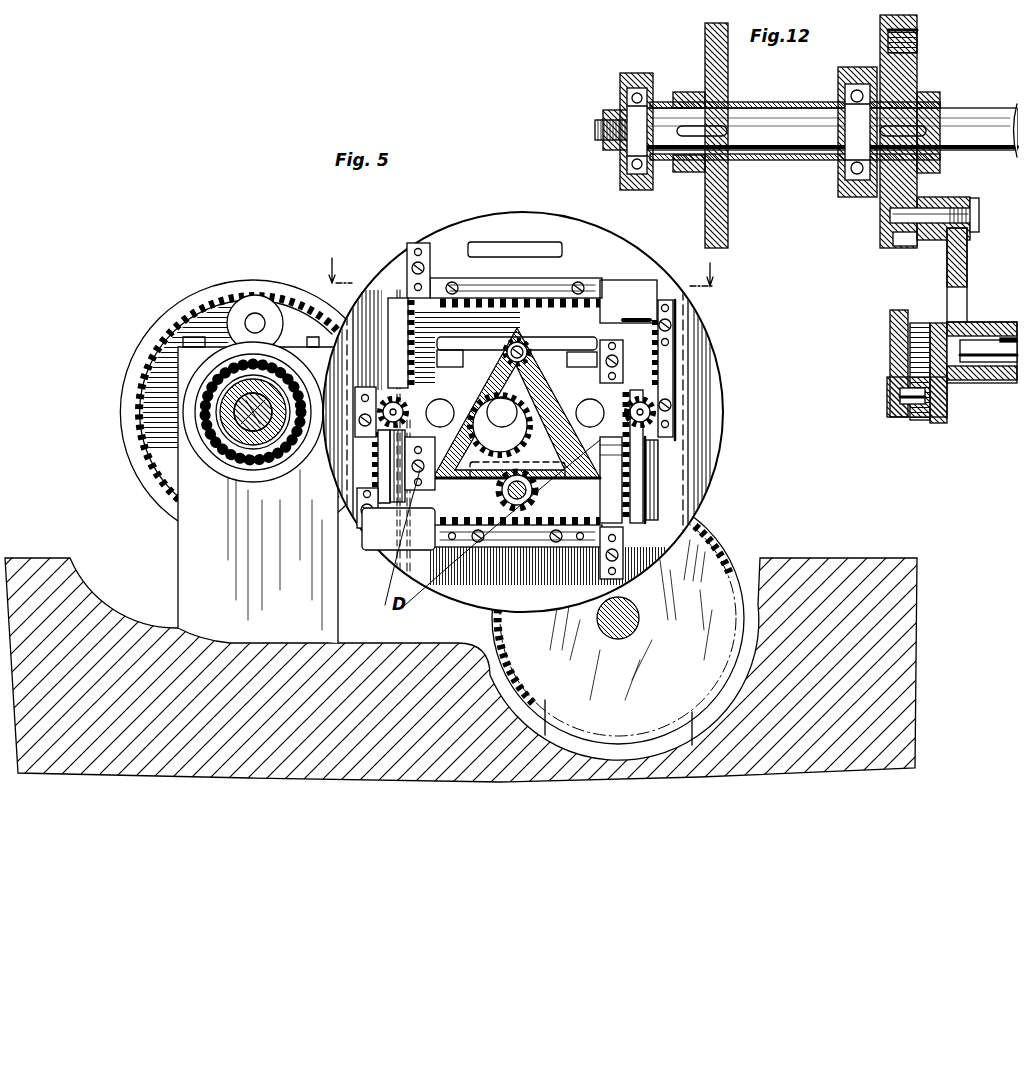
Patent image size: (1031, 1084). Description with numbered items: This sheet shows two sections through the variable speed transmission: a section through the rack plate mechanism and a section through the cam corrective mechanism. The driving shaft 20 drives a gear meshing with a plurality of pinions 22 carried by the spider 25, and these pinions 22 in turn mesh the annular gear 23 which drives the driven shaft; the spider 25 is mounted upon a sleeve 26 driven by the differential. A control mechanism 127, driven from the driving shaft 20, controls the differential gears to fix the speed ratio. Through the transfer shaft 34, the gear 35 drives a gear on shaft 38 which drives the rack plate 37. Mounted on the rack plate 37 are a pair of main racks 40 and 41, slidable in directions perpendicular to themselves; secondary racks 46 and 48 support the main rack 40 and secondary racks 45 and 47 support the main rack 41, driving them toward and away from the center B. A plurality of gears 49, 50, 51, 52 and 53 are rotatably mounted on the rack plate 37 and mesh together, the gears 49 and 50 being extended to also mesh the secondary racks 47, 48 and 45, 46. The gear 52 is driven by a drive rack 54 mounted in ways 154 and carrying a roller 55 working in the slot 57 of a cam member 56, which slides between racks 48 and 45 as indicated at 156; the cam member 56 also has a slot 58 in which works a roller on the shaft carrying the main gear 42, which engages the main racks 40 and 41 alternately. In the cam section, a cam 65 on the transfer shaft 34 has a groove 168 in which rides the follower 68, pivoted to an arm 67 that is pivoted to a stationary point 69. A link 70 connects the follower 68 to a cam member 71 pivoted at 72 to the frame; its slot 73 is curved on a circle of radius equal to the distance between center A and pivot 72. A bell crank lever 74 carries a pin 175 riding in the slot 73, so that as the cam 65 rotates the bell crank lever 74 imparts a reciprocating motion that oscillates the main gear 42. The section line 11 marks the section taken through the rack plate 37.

In FIG. 5, the section line 11- 11 is at (523, 271).
In FIG. 5, the driving shaft 20 is at (232, 424).
In FIG. 5, the pinions 22 is at (250, 312).
In FIG. 5, the annular gear 23 is at (122, 364).
In FIG. 5, the spider 25 is at (228, 312).
In FIG. 5, the sleeve 26 is at (245, 452).
In FIG. 5, the transfer shaft 34 is at (636, 616).
In FIG. 12, the transfer shaft 34 is at (806, 131).
In FIG. 5, the gear 35 is at (618, 618).
In FIG. 12, the gear 35 is at (728, 214).
In FIG. 5, the rack plate 37 is at (446, 232).
In FIG. 5, the shaft 38 is at (500, 425).
In FIG. 5, the main rack 40 is at (500, 278).
In FIG. 5, the main rack 41 is at (520, 540).
In FIG. 5, the main gear 42 is at (498, 540).
In FIG. 5, the secondary rack 45 is at (615, 480).
In FIG. 5, the secondary rack 46 is at (672, 378).
In FIG. 5, the secondary rack 47 is at (360, 492).
In FIG. 5, the secondary rack 48 is at (404, 334).
In FIG. 5, the gear 49 is at (330, 458).
In FIG. 5, the gear 50 is at (655, 405).
In FIG. 5, the gear 51 is at (405, 455).
In FIG. 5, the gear 52 is at (497, 404).
In FIG. 5, the gear 53 is at (595, 400).
In FIG. 5, the drive rack 54 is at (517, 352).
In FIG. 5, the roller 55 is at (525, 346).
In FIG. 5, the cam member 56 is at (506, 462).
In FIG. 5, the slot 57 is at (516, 403).
In FIG. 5, the slot 58 is at (486, 491).
In FIG. 12, the cam 65 is at (905, 82).
In FIG. 12, the arm 67 is at (932, 200).
In FIG. 12, the follower 68 is at (893, 247).
In FIG. 12, the stationary point 69 is at (980, 216).
In FIG. 12, the link 70 is at (967, 282).
In FIG. 12, the cam member 71 is at (945, 420).
In FIG. 12, the pivot 72 is at (990, 382).
In FIG. 12, the slot 73 is at (918, 328).
In FIG. 12, the bell crank lever 74 is at (890, 340).
In FIG. 5, the control mechanism 127 is at (753, 564).
In FIG. 5, the ways 154 is at (575, 348).
In FIG. 5, the sliding guide 156 is at (428, 322).
In FIG. 12, the groove 168 is at (920, 46).
In FIG. 12, the pin 175 is at (916, 422).